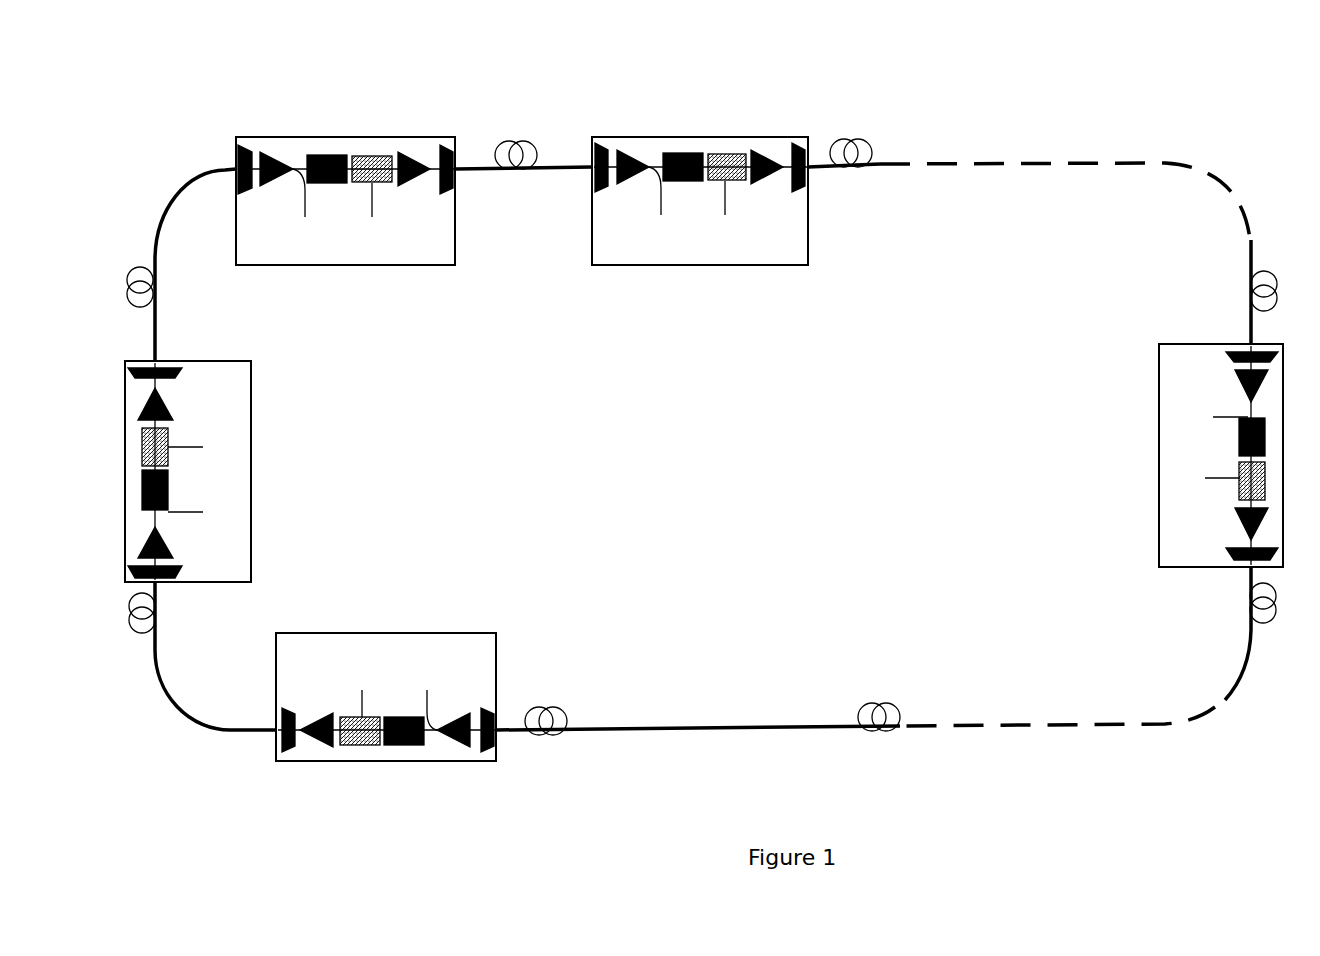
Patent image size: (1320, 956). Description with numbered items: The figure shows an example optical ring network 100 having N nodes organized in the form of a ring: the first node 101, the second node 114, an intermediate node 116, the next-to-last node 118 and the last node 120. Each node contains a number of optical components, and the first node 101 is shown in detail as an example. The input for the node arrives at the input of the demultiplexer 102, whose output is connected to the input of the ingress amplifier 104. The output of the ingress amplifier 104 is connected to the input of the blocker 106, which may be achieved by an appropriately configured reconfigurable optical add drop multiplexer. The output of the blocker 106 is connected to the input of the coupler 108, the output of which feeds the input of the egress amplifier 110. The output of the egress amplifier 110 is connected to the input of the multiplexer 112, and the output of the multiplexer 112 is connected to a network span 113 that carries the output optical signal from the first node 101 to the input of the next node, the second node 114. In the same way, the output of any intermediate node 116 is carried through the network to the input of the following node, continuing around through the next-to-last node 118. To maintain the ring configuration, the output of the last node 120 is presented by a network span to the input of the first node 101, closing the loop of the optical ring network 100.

The optical ring network 100 is at (964, 126).
The Node 1 101 is at (350, 265).
The demultiplexer 102 is at (240, 145).
The ingress amplifier 104 is at (280, 160).
The blocker 106 is at (327, 183).
The coupler 108 is at (375, 157).
The egress amplifier 110 is at (412, 185).
The multiplexer 112 is at (450, 143).
The network span 113 is at (506, 170).
The Node 2 114 is at (695, 265).
The Node i 116 is at (1158, 464).
The Node N-1 118 is at (392, 633).
The Node N 120 is at (252, 402).